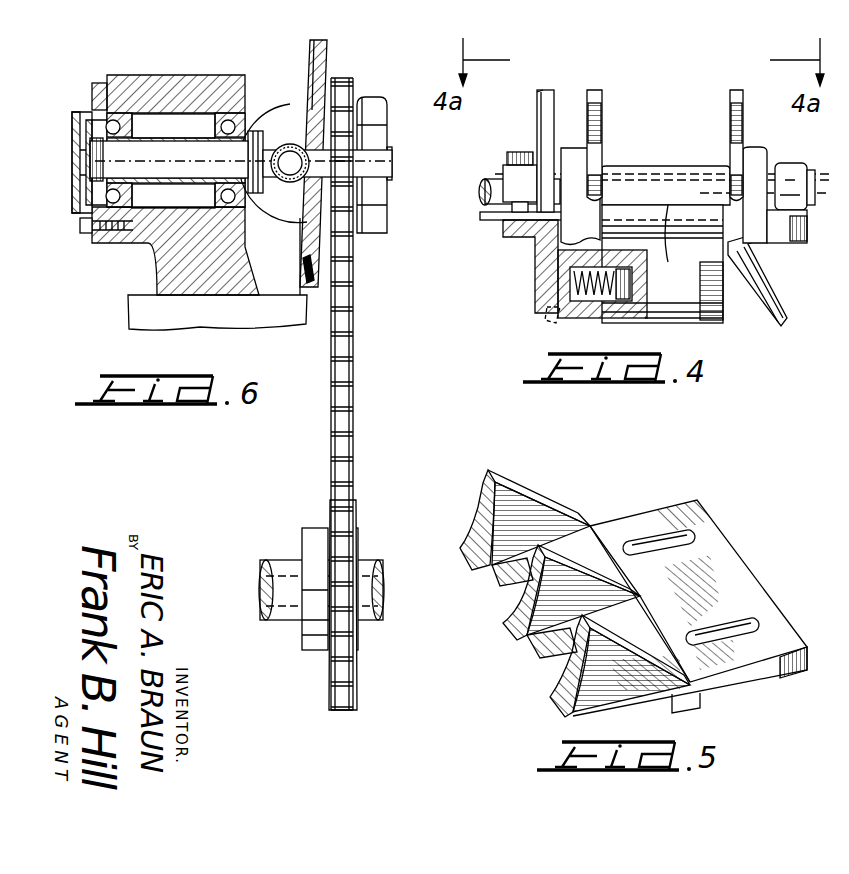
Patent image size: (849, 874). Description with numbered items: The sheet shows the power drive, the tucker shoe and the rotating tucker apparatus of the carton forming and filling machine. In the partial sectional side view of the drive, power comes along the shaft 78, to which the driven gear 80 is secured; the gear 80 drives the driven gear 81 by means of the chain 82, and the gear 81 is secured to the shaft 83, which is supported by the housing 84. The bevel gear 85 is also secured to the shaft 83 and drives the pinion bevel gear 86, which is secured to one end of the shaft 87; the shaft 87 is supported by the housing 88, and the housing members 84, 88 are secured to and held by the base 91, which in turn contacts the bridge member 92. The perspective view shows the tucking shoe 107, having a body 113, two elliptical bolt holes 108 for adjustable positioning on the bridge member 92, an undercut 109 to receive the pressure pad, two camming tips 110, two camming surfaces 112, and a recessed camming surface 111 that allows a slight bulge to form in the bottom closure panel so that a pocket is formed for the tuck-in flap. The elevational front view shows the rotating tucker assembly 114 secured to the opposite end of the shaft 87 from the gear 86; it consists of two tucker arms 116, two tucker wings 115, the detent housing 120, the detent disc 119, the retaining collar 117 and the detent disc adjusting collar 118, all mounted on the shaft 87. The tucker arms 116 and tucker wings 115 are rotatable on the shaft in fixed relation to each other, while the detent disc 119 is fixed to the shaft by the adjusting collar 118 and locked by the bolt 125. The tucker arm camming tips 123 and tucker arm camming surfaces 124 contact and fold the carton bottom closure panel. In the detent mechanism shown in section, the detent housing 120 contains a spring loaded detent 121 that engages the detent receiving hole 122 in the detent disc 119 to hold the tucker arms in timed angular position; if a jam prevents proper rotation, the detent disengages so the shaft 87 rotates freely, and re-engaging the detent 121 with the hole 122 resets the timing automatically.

In FIG. 6, the shaft 78 is at (279, 572).
In FIG. 6, the driven gear 80 is at (333, 512).
In FIG. 6, the driven gear 81 is at (372, 100).
In FIG. 6, the chain 82 is at (335, 448).
In FIG. 6, the shaft 83 is at (293, 178).
In FIG. 6, the housing 84 is at (160, 90).
In FIG. 6, the bevel gear 85 is at (308, 48).
In FIG. 6, the pinion bevel gear 86 is at (290, 142).
In FIG. 4, the shaft 87 is at (492, 186).
In FIG. 6, the housing 88 is at (285, 120).
In FIG. 6, the base 91 is at (273, 278).
In FIG. 6, the bridge member 92 is at (140, 312).
In FIG. 5, the tucking shoe 107 is at (745, 572).
In FIG. 5, the elliptical bolt holes 108 is at (700, 540).
In FIG. 5, the undercut 109 is at (626, 705).
In FIG. 5, the camming tips 110 is at (487, 476).
In FIG. 5, the recessed camming surface 111 is at (515, 612).
In FIG. 5, the camming surfaces 112 is at (470, 525).
In FIG. 5, the body 113 is at (760, 606).
In FIG. 4, the tucker assembly 114 is at (642, 168).
In FIG. 4, the tucker wings 115 is at (550, 318).
In FIG. 4, the tucker arms 116 is at (595, 102).
In FIG. 4, the retaining collar 117 is at (793, 170).
In FIG. 4, the detent disc adjusting collar 118 is at (508, 228).
In FIG. 4, the detent disc 119 is at (544, 94).
In FIG. 4, the detent housing 120 is at (653, 292).
In FIG. 4, the spring loaded detent 121 is at (600, 303).
In FIG. 4, the detent receiving hole 122 is at (572, 284).
In FIG. 4, the tucker arm camming tips 123 is at (606, 205).
In FIG. 4, the tucker arm camming surfaces 124 is at (578, 155).
In FIG. 4, the bolt 125 is at (521, 153).